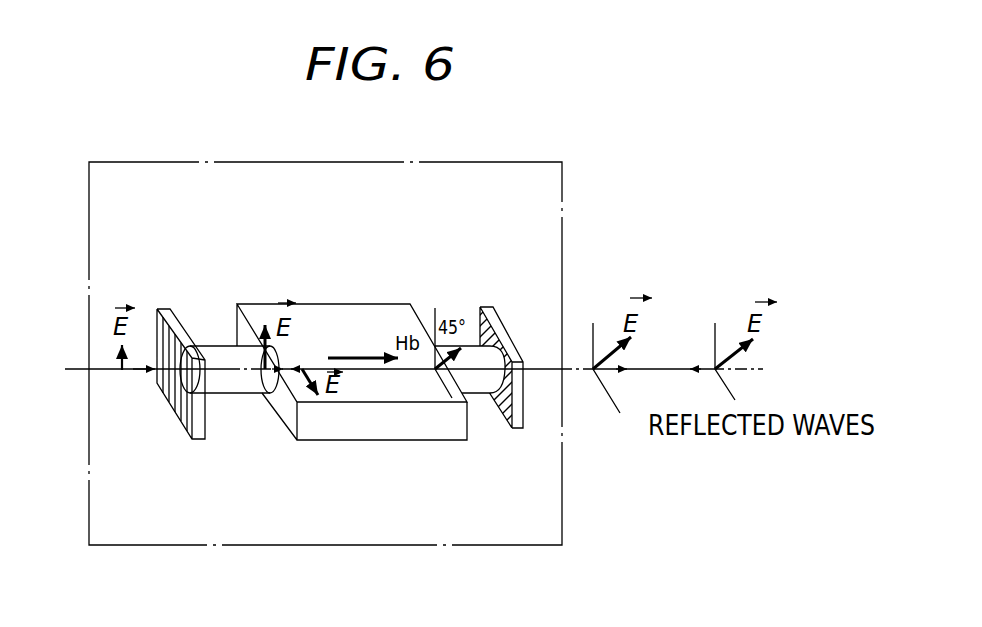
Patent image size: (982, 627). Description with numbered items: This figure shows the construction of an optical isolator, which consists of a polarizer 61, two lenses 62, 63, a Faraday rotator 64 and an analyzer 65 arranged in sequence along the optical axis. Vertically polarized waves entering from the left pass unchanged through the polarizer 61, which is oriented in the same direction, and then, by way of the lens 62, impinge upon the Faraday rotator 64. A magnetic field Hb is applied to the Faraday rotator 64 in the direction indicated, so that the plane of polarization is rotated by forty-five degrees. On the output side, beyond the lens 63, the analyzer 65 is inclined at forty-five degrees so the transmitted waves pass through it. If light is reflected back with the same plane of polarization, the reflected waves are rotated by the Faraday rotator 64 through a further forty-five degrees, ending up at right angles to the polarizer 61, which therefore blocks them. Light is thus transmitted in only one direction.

The polarizer 61 is at (183, 425).
The lens 62 is at (215, 346).
The lens 63 is at (493, 304).
The Faraday rotator 64 is at (320, 440).
The analyzer 65 is at (504, 428).